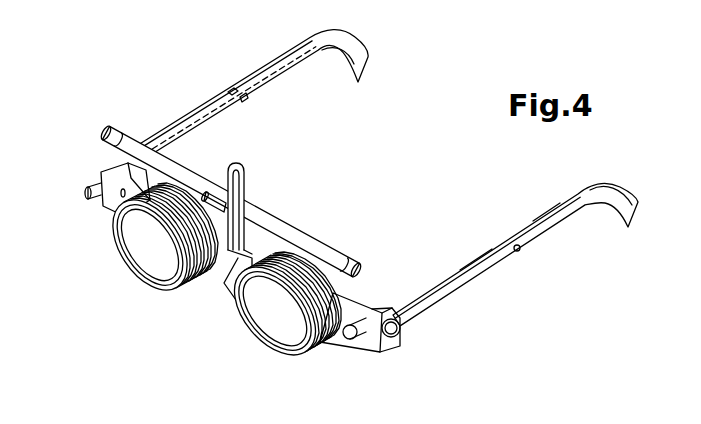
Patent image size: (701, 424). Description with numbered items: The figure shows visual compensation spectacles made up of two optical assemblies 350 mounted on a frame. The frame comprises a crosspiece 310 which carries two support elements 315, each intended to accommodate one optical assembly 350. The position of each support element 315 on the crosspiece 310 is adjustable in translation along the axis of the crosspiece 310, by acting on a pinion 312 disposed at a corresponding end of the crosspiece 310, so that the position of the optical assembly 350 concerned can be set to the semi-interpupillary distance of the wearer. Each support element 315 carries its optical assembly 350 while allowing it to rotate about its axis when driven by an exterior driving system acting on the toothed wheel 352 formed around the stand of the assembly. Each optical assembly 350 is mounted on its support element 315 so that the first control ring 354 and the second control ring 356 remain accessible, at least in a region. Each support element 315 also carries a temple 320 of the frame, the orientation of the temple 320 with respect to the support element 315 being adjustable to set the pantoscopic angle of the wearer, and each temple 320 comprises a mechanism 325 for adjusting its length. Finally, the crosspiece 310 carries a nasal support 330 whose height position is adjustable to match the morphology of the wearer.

The crosspiece 310 is at (213, 175).
The pinion 312 is at (110, 123).
The support element 315 is at (190, 183).
The temple 320 is at (298, 66).
The mechanism for adjusting the length of the temple 325 is at (484, 276).
The nasal support 330 is at (260, 327).
The optical assembly 350 is at (124, 260).
The toothed wheel 352 is at (200, 277).
The first control ring 354 is at (121, 247).
The second control ring 356 is at (223, 284).